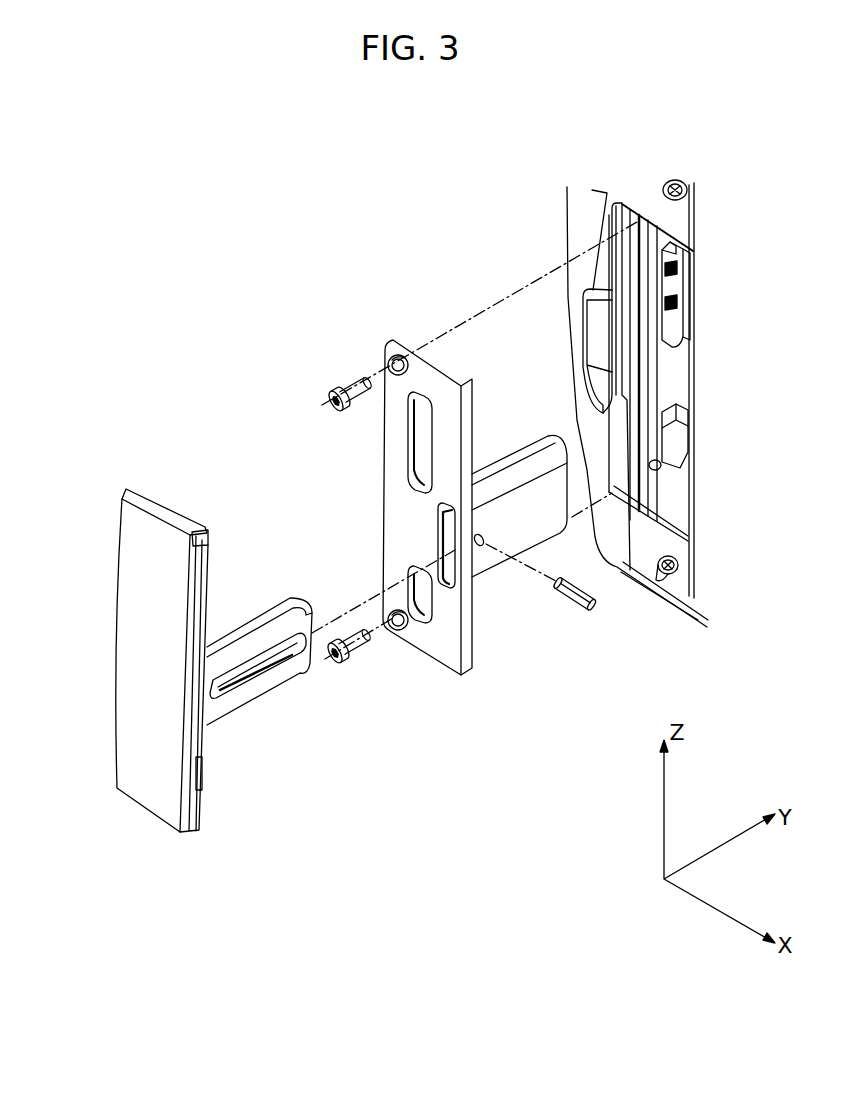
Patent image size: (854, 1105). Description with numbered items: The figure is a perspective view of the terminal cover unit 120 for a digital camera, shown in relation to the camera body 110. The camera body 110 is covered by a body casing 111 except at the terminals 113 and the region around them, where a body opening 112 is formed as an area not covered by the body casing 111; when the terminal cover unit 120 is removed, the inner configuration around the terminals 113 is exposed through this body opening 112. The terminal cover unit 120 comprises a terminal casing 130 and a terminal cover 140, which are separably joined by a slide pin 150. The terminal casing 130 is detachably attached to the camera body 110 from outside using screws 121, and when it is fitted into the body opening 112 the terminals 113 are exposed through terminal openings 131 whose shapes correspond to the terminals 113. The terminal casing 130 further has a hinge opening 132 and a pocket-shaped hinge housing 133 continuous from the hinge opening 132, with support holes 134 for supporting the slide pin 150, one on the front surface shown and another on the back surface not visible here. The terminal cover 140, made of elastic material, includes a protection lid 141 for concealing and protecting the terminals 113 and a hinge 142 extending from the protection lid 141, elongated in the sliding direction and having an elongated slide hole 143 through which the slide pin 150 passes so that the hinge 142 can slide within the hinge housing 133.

The camera body 110 is at (629, 410).
The body casing 111 is at (574, 249).
The body opening 112 is at (667, 368).
The terminals 113 is at (687, 264).
The terminal cover unit 120 is at (336, 553).
The screws 121 is at (353, 375).
The terminal casing 130 is at (374, 513).
The terminal openings 131 is at (423, 423).
The hinge opening 132 is at (447, 573).
The hinge housing 133 is at (513, 480).
The support holes 134 is at (484, 545).
The terminal cover 140 is at (185, 622).
The protection lid 141 is at (173, 750).
The hinge 142 is at (259, 734).
The slide hole 143 is at (270, 657).
The slide pin 150 is at (590, 607).